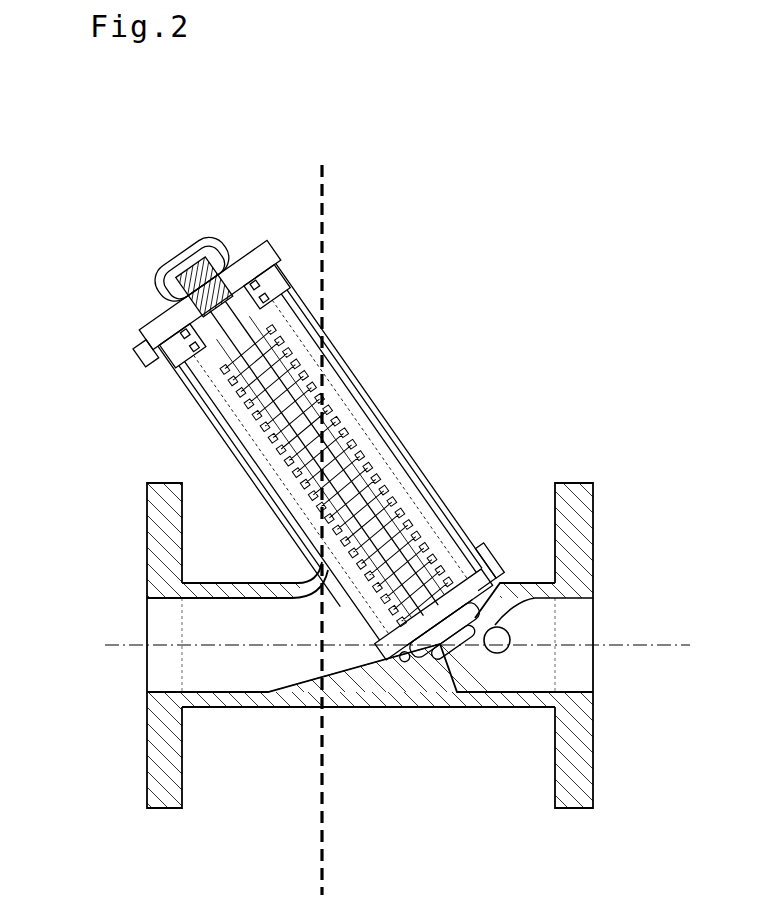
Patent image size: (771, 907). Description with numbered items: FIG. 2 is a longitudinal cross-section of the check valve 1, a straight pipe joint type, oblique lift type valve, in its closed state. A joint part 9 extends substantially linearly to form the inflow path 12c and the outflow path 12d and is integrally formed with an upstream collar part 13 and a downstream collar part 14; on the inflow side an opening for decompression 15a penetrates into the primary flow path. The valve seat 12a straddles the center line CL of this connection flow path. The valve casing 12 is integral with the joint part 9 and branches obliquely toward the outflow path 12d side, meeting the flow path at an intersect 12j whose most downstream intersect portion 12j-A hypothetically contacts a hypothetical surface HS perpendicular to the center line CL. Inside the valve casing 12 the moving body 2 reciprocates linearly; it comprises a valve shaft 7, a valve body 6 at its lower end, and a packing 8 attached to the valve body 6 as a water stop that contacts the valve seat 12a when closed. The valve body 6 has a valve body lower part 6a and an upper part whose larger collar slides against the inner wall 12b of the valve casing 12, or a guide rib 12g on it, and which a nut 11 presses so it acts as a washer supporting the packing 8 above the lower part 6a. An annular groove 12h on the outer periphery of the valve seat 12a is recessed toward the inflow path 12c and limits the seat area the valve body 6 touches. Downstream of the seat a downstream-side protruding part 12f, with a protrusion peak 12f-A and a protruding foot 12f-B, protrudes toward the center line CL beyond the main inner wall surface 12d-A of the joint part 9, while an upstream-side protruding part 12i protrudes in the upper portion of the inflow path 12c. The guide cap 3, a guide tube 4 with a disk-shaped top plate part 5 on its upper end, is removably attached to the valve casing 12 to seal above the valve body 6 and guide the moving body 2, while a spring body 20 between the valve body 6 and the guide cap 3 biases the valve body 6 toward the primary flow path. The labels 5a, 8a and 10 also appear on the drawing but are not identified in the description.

The check valve 1 is at (155, 232).
The moving body 2 is at (432, 505).
The guide cap 3 is at (232, 242).
The guide tube 4 is at (388, 425).
The top plate part 5 is at (262, 247).
The cover flange 5a is at (143, 340).
The valve body 6 is at (460, 758).
The valve body lower part 6a is at (455, 680).
The valve shaft 7 is at (348, 372).
The packing 8 is at (520, 660).
The seal portion 8a is at (445, 685).
The joint part 9 is at (228, 715).
The nut 10 is at (272, 262).
The nut 11 is at (472, 548).
The valve casing 12 is at (340, 325).
The valve seat 12a is at (288, 271).
The inner wall 12b is at (300, 312).
The inflow path 12c is at (585, 668).
The outflow path 12d is at (155, 668).
The inner wall surface 12d-A is at (193, 597).
The downstream-side protruding part 12f is at (334, 703).
The protrusion peak 12f-A is at (396, 665).
The protruding foot 12f-B is at (302, 684).
The guide rib 12g is at (362, 396).
The annular groove 12h is at (506, 574).
The upstream-side protruding part 12i is at (593, 600).
The intersect 12j is at (497, 580).
The most downstream intersect portion 12j-A is at (323, 575).
The collar part 13 is at (580, 483).
The collar part 14 is at (160, 483).
The opening for decompression 15a is at (520, 634).
The spring body 20 is at (412, 455).
The hypothetical surface HS is at (328, 172).
The center line CL is at (655, 640).